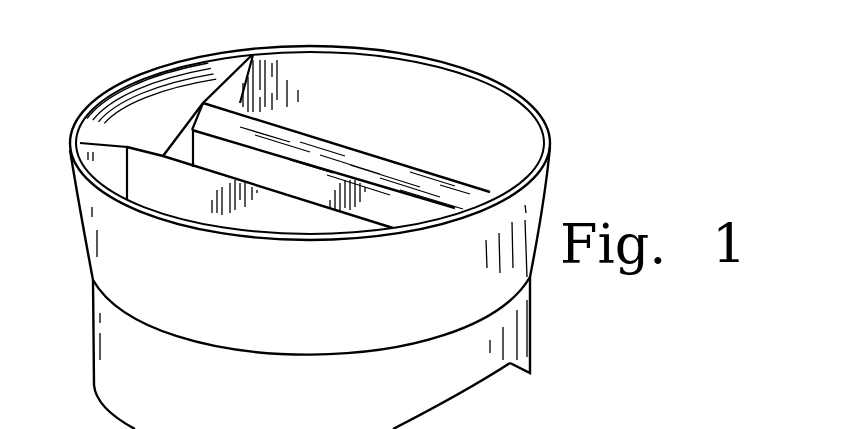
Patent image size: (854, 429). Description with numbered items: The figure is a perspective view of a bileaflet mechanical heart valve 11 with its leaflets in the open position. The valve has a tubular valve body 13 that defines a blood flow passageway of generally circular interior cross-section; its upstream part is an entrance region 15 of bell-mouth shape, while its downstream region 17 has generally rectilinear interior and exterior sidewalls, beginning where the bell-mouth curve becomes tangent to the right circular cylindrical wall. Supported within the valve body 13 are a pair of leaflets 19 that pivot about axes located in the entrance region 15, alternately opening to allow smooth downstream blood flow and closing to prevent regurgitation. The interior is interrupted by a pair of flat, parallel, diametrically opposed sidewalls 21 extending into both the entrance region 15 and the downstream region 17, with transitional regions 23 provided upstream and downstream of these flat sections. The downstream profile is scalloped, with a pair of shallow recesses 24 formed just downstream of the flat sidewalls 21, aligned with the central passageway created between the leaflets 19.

The heart valve 11 is at (514, 72).
The tubular valve body 13 is at (103, 232).
The entrance region 15 is at (297, 72).
The downstream region 17 is at (117, 372).
The leaflets 19 is at (387, 200).
The flat sidewalls 21 is at (230, 93).
The transitional regions 23 is at (143, 115).
The shallow recesses 24 is at (493, 378).